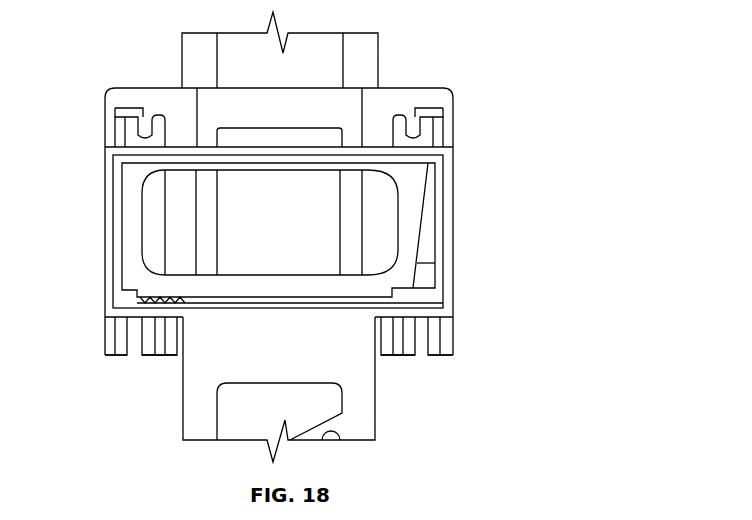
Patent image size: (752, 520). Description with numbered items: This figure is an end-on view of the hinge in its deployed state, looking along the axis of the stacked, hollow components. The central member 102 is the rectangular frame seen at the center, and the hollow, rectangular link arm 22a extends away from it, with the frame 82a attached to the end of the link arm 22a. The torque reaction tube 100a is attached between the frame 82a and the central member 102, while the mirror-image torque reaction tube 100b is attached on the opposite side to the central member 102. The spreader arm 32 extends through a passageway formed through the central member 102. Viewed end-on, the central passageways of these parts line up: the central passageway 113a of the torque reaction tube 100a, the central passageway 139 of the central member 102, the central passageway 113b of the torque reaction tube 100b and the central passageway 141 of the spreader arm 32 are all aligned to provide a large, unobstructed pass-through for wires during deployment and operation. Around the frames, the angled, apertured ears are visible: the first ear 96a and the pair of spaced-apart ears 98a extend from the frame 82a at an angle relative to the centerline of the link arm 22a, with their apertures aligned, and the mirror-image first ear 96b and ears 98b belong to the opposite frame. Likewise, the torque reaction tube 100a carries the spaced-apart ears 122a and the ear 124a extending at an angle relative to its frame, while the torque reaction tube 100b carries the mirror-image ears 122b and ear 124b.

The central member 102 is at (413, 87).
The link arm 22a is at (453, 240).
The frame 82a is at (432, 302).
The torque reaction tube 100a is at (412, 230).
The torque reaction tube 100b is at (132, 223).
The central passageway 113a is at (415, 217).
The central passageway 139 is at (415, 217).
The central passageway 113b is at (415, 217).
The central passageway 141 is at (273, 241).
The first ear 96a is at (397, 335).
The first ear 96b is at (160, 335).
The ear 124a is at (117, 337).
The ear 124b is at (435, 338).
The spaced-apart ears 98a is at (128, 358).
The spaced-apart ears 98b is at (445, 357).
The spaced-apart ears 122a is at (407, 357).
The spaced-apart ears 122b is at (148, 357).
The spreader arm 32 is at (353, 413).